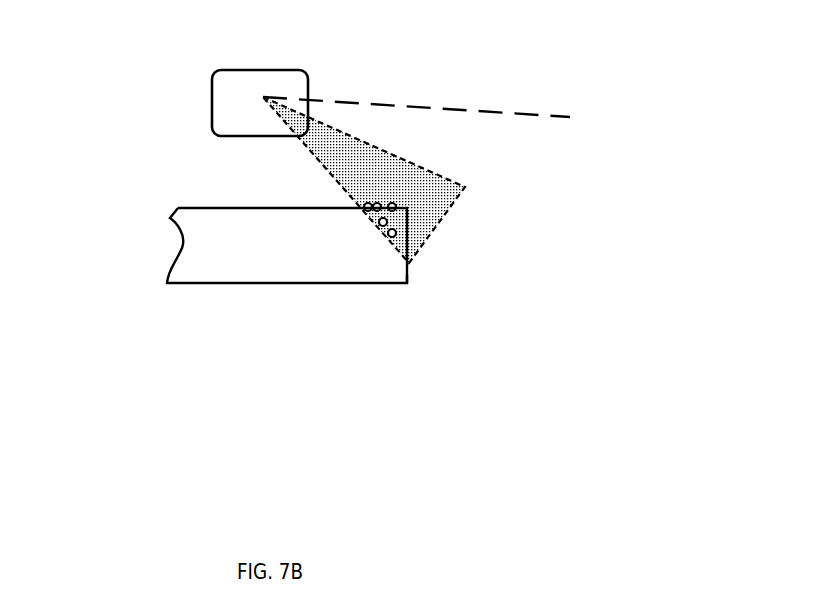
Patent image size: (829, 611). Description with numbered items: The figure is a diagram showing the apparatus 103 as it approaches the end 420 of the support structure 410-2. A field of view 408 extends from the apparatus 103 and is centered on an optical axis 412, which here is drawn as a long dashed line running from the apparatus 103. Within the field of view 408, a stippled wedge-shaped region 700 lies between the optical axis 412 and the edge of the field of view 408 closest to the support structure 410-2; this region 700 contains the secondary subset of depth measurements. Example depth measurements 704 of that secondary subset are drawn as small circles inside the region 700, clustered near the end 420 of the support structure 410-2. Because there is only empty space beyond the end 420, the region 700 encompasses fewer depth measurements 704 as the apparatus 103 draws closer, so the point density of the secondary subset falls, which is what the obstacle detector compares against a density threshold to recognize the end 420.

The apparatus 103 is at (212, 102).
The field of view 408 is at (522, 113).
The optical axis 412 is at (423, 170).
The region 700 is at (342, 168).
The depth measurements 704 is at (398, 207).
The support structure 410-2 is at (167, 283).
The end 420 is at (407, 275).